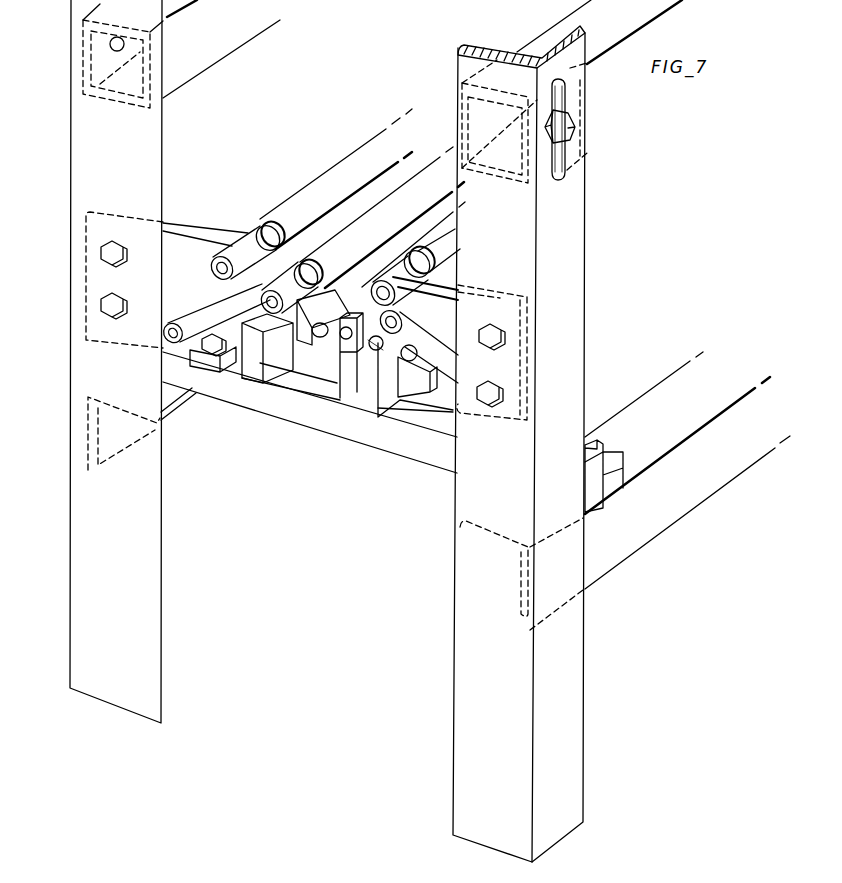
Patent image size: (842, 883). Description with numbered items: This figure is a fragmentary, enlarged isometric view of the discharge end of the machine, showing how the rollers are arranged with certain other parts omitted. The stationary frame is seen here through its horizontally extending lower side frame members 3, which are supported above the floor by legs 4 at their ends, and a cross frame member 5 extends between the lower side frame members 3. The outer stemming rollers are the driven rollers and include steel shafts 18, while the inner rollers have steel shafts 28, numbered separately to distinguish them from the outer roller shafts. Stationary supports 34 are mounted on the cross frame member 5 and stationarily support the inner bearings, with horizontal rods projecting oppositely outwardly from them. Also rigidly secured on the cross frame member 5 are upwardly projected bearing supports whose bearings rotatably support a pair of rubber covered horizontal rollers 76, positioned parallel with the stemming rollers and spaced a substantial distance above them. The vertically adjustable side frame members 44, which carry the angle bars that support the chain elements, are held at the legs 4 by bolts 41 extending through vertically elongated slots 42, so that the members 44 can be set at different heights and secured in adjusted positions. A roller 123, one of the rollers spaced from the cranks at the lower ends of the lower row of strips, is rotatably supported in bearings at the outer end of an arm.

The lower side frame member 3 is at (181, 398).
The leg 4 is at (160, 597).
The cross frame member 5 is at (378, 440).
The steel shaft 18 is at (321, 330).
The shaft of inner roller 28 is at (377, 350).
The stationary support 34 is at (361, 380).
The bolt 41 is at (568, 128).
The vertically elongated slot 42 is at (566, 174).
The vertically adjustable side frame member 44 is at (233, 45).
The rubber covered horizontal roller 76 is at (428, 242).
The roller 123 is at (337, 247).